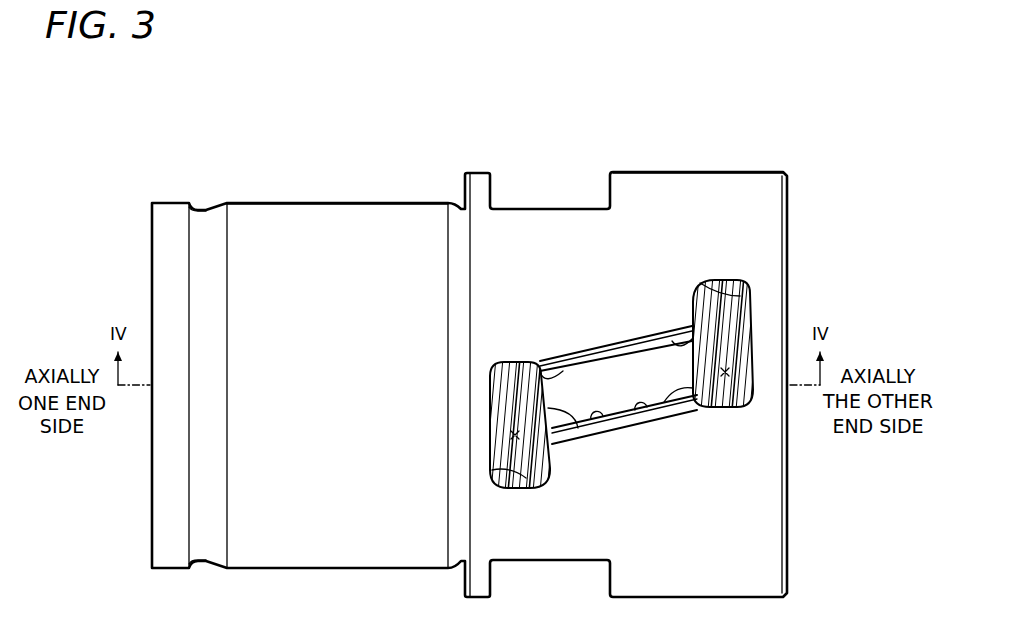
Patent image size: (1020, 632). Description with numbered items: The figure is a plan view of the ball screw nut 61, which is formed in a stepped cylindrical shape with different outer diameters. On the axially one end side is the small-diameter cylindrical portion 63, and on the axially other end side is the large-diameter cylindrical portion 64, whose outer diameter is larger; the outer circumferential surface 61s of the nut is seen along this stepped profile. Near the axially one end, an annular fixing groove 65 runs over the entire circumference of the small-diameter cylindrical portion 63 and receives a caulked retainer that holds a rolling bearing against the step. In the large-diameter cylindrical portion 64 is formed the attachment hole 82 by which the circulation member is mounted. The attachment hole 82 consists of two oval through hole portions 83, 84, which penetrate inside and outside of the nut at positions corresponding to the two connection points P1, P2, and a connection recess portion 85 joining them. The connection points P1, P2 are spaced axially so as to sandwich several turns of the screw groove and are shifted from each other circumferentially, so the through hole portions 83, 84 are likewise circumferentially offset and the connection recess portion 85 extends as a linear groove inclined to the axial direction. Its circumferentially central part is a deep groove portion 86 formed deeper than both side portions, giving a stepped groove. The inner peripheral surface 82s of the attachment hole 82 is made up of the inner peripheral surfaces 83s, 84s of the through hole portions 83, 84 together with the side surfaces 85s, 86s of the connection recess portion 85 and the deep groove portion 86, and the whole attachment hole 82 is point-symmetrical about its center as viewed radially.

The ball screw nut 61 is at (143, 165).
The fixing groove 65 is at (200, 206).
The small-diameter cylindrical portion 63 is at (314, 212).
The large-diameter cylindrical portion 64 is at (686, 182).
The outer circumferential surface 61s is at (776, 205).
The attachment hole 82 is at (488, 367).
The inner peripheral surface 82s is at (622, 414).
The through hole portion 83 is at (506, 362).
The inner peripheral surface 83s is at (500, 478).
The through hole portion 84 is at (738, 406).
The inner peripheral surface 84s is at (733, 300).
The connection recess portion 85 is at (645, 418).
The side surface 85s is at (680, 406).
The deep groove portion 86 is at (598, 420).
The side surface 86s is at (575, 414).
The connection point P1 is at (519, 442).
The connection point P2 is at (722, 404).